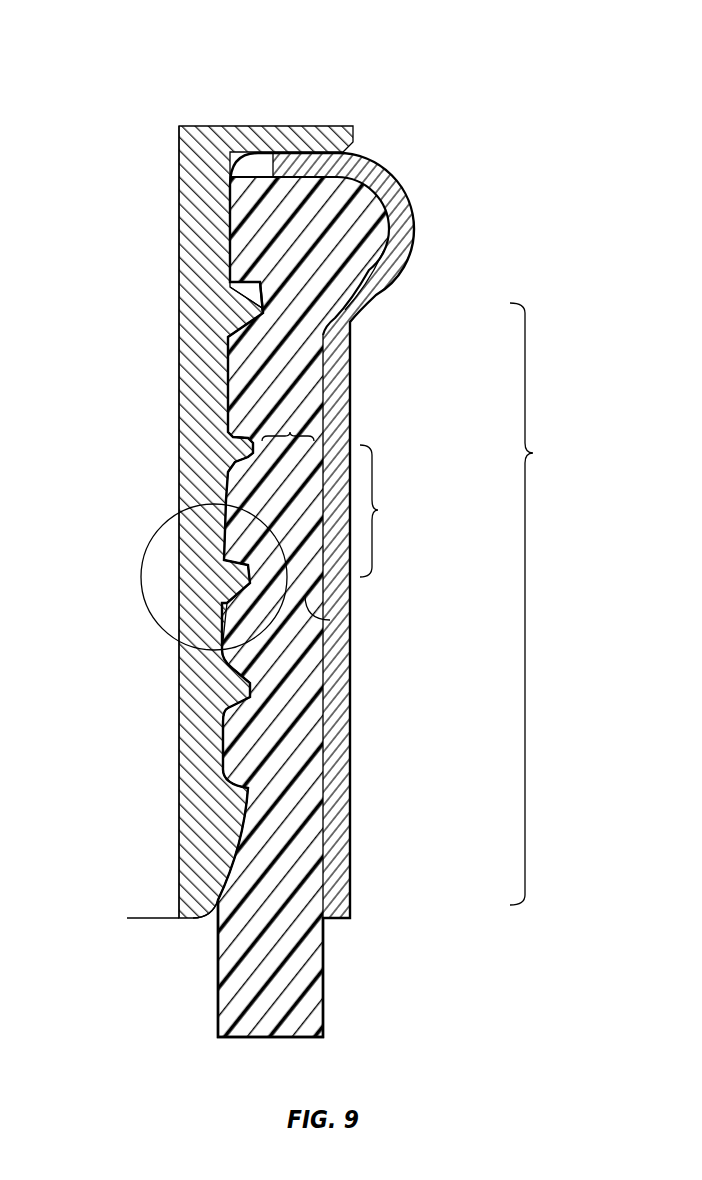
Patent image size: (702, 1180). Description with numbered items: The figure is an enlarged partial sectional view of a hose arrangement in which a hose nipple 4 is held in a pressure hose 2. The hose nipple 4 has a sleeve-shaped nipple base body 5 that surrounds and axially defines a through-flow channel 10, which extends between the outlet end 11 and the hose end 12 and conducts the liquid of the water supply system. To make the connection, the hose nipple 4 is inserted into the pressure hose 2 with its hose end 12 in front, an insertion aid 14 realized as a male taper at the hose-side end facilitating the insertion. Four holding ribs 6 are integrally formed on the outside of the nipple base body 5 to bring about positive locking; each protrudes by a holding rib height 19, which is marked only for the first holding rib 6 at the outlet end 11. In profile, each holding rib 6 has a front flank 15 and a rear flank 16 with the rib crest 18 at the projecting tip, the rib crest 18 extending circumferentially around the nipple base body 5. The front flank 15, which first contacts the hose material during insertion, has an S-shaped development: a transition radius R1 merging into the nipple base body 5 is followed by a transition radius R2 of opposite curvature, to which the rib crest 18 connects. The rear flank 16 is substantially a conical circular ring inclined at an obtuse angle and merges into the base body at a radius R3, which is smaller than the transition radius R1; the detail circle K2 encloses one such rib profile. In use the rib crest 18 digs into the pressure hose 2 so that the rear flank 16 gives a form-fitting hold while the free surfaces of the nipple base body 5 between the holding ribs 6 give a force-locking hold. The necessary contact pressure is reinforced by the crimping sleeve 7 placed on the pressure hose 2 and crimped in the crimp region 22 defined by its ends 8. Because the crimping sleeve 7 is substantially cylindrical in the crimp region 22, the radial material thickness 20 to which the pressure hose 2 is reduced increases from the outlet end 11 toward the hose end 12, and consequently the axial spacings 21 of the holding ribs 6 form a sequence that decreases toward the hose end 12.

The pressure hose 2 is at (312, 978).
The hose nipple 4 is at (200, 115).
The nipple base body 5 is at (195, 382).
The holding ribs 6 is at (212, 317).
The crimping sleeve 7 is at (422, 192).
The ends 8 is at (353, 318).
The through-flow channel 10 is at (150, 892).
The outlet end 11 is at (268, 57).
The hose end 12 is at (173, 957).
The insertion aid 14 is at (213, 825).
The front flank 15 is at (250, 467).
The rear flank 16 is at (248, 418).
The rib crest 18 is at (259, 690).
The holding rib height 19 is at (250, 282).
The radial material thickness 20 is at (292, 432).
The axial spacings 21 is at (381, 511).
The crimp region 22 is at (536, 604).
The detail circle K2 is at (142, 565).
The transition radius R1 is at (230, 726).
The transition radius R2 is at (248, 698).
The radius R3 is at (232, 668).